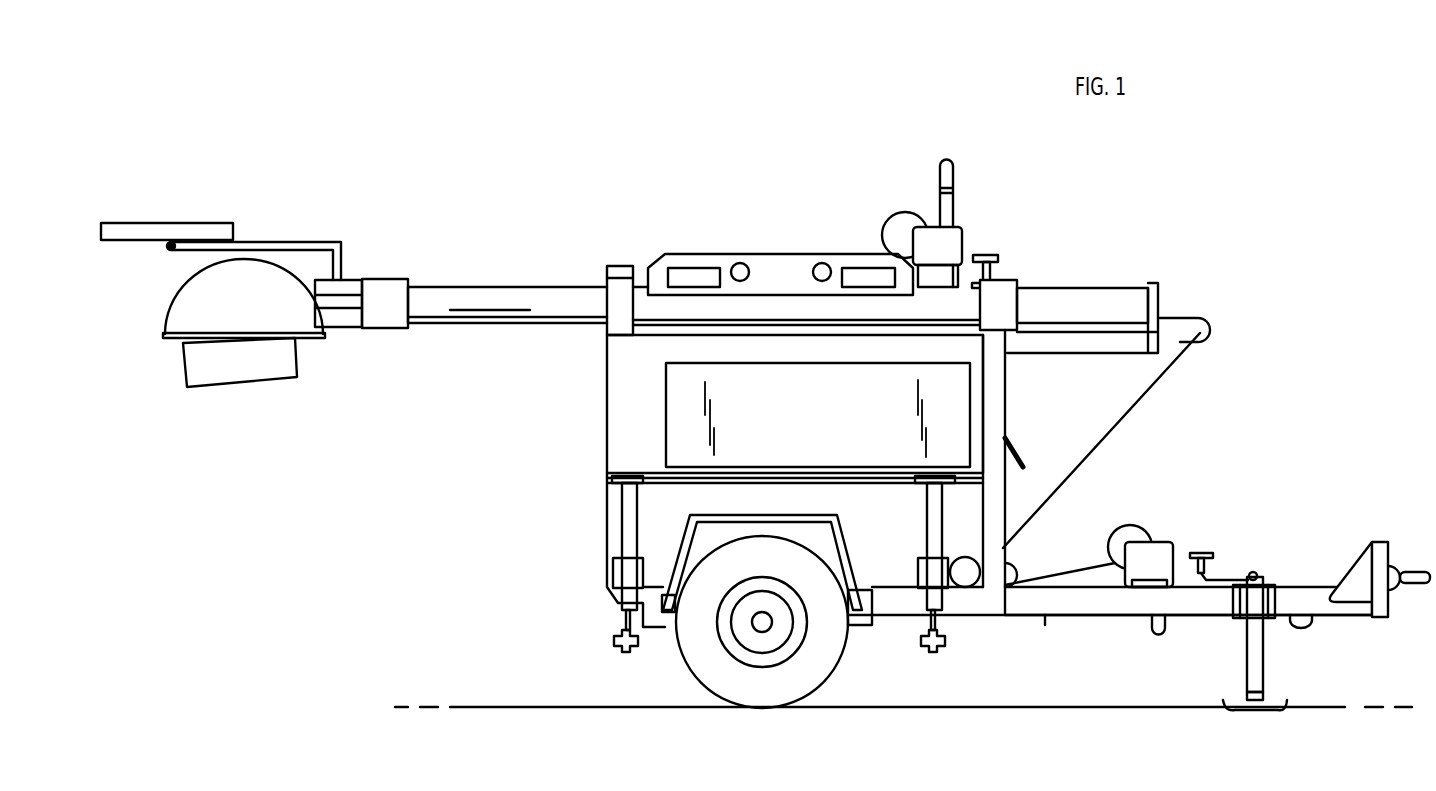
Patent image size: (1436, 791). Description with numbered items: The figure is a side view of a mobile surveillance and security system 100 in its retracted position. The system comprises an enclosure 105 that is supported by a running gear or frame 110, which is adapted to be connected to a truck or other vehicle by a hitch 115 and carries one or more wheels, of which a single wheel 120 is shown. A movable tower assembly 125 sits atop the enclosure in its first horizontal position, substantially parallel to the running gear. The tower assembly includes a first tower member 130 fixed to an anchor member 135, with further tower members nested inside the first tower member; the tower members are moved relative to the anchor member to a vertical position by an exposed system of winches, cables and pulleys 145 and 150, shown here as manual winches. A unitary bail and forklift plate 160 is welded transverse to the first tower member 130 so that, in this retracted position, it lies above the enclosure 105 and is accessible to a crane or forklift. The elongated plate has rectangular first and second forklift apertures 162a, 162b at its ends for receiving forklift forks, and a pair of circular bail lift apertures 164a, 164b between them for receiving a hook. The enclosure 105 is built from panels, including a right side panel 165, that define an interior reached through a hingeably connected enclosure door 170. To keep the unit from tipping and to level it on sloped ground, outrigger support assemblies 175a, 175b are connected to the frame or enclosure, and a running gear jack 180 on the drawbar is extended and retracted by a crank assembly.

The mobile surveillance and security system 100 is at (423, 501).
The enclosure 105 is at (605, 378).
The frame 110 is at (1120, 617).
The hitch 115 is at (1405, 565).
The wheel 120 is at (832, 678).
The movable tower assembly 125 is at (1050, 279).
The first tower member 130 is at (470, 287).
The anchor member 135 is at (1033, 357).
The winch, cable and pulley system 145 is at (1120, 452).
The winch, cable and pulley system 150 is at (895, 205).
The unitary bail and forklift plate 160 is at (657, 265).
The first forklift aperture 162a is at (683, 275).
The second forklift aperture 162b is at (868, 275).
The bail lift aperture 164a is at (742, 266).
The bail lift aperture 164b is at (820, 264).
The right side panel 165 is at (628, 457).
The enclosure door 170 is at (665, 376).
The outrigger support assembly 175a is at (625, 597).
The outrigger support assembly 175b is at (937, 595).
The running gear jack 180 is at (1265, 672).